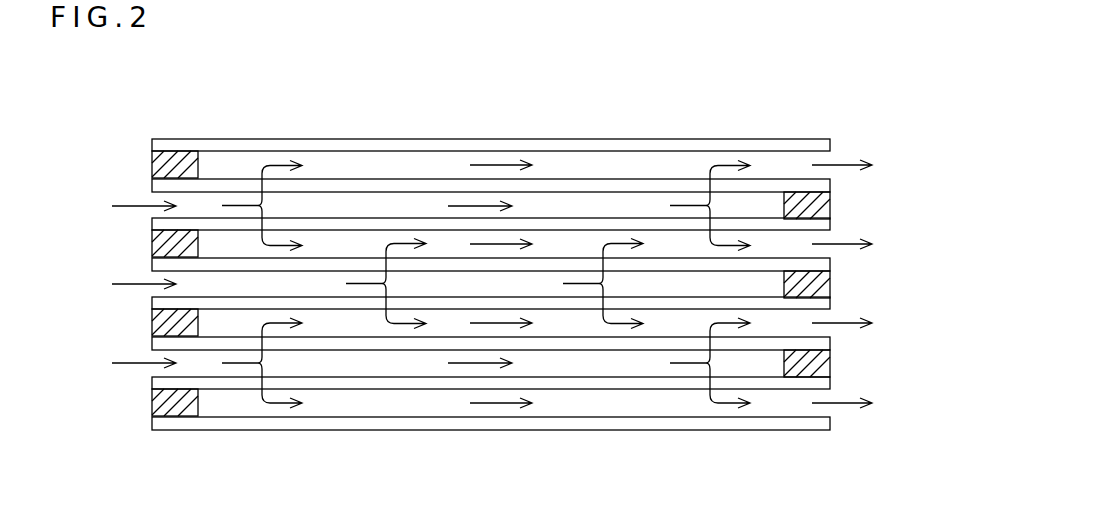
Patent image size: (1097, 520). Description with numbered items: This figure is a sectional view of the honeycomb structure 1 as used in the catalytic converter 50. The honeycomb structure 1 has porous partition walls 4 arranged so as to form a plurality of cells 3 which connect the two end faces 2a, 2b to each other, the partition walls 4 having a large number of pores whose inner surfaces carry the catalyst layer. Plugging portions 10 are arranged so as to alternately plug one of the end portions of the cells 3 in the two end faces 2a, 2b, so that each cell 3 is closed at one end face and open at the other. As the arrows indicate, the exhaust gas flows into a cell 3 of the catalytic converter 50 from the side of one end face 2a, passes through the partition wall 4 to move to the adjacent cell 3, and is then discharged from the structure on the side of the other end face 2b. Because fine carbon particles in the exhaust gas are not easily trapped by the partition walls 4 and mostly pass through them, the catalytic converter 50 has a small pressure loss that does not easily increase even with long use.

The honeycomb structure 1 is at (464, 276).
The catalytic converter 50 is at (377, 126).
The end face 2a is at (155, 126).
The end face 2b is at (829, 126).
The cell 3 is at (640, 163).
The partition wall 4 is at (410, 345).
The plugging portion 10 is at (157, 325).